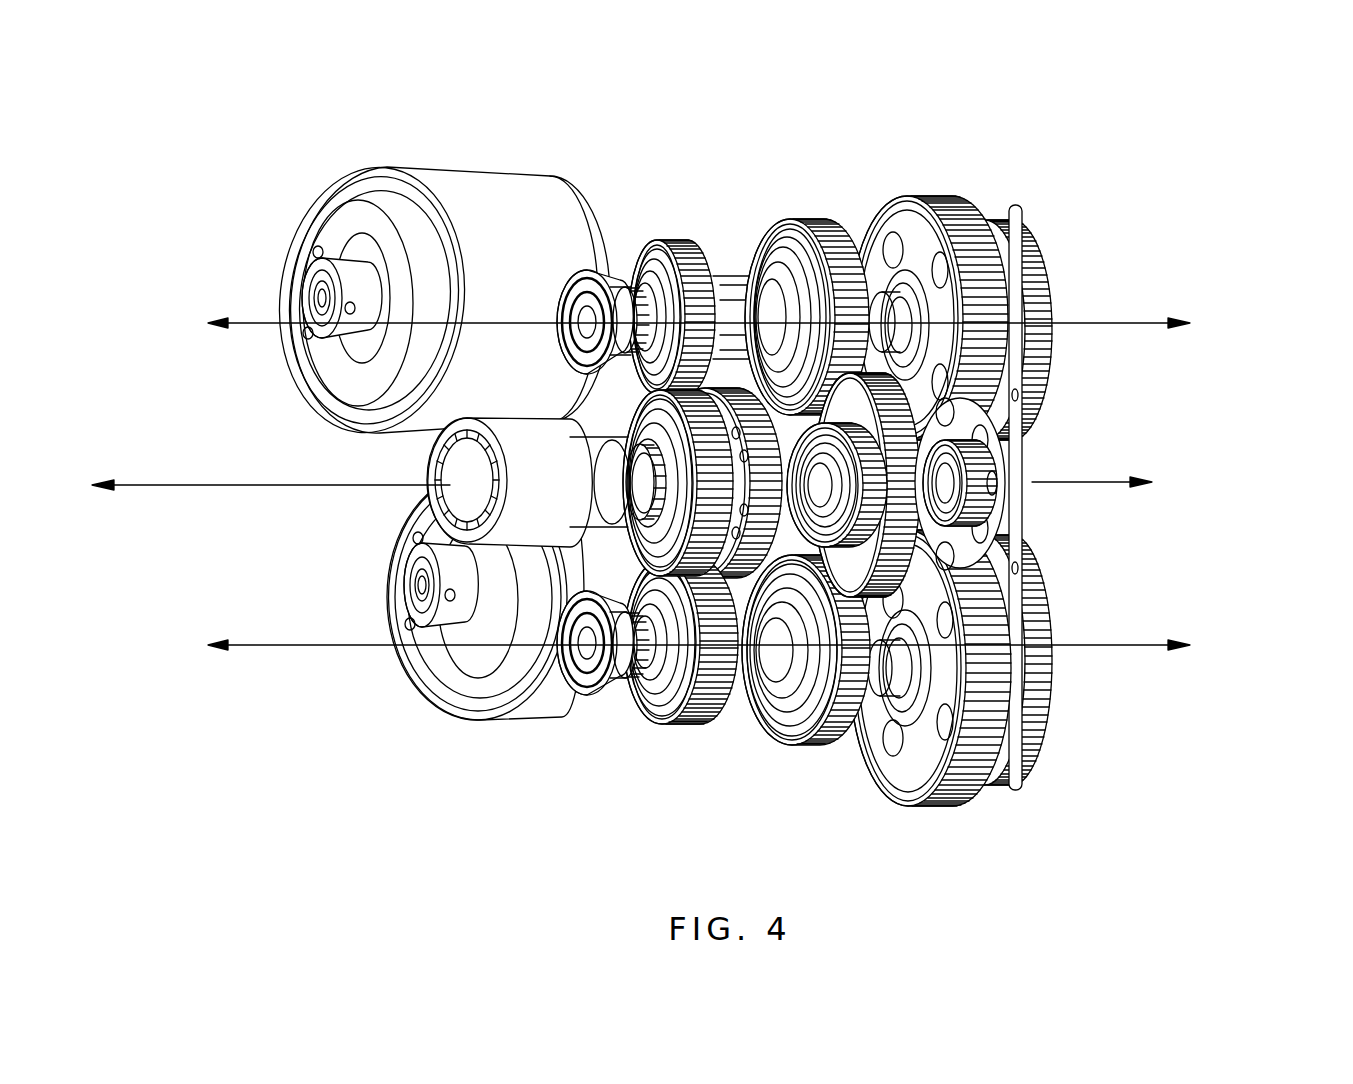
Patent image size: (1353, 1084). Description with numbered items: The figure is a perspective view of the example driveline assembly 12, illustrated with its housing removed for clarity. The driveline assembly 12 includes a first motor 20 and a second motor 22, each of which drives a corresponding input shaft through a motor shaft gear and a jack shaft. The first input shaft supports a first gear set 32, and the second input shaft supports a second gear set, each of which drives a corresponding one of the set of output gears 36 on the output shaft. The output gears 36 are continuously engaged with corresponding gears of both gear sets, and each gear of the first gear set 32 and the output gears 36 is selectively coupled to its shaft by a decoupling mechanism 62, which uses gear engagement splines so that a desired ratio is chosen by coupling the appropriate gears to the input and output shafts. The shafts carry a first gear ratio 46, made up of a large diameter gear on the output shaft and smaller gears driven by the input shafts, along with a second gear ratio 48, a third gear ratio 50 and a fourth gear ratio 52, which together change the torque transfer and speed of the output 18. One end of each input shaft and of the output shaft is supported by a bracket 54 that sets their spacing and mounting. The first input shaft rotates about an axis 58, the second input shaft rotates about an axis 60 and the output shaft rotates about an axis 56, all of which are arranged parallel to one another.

The driveline assembly 12 is at (705, 481).
The output 18 is at (604, 568).
The first motor 20 is at (470, 178).
The second motor 22 is at (447, 672).
The first gear set 32 is at (942, 479).
The output gears 36 is at (1000, 485).
The first gear ratio 46 is at (987, 457).
The second gear ratio 48 is at (612, 565).
The third gear ratio 50 is at (800, 757).
The fourth gear ratio 52 is at (1015, 501).
The bracket 54 is at (1023, 467).
The axis 56 is at (240, 490).
The axis 58 is at (266, 326).
The axis 60 is at (318, 647).
The decoupling mechanism 62 is at (767, 263).